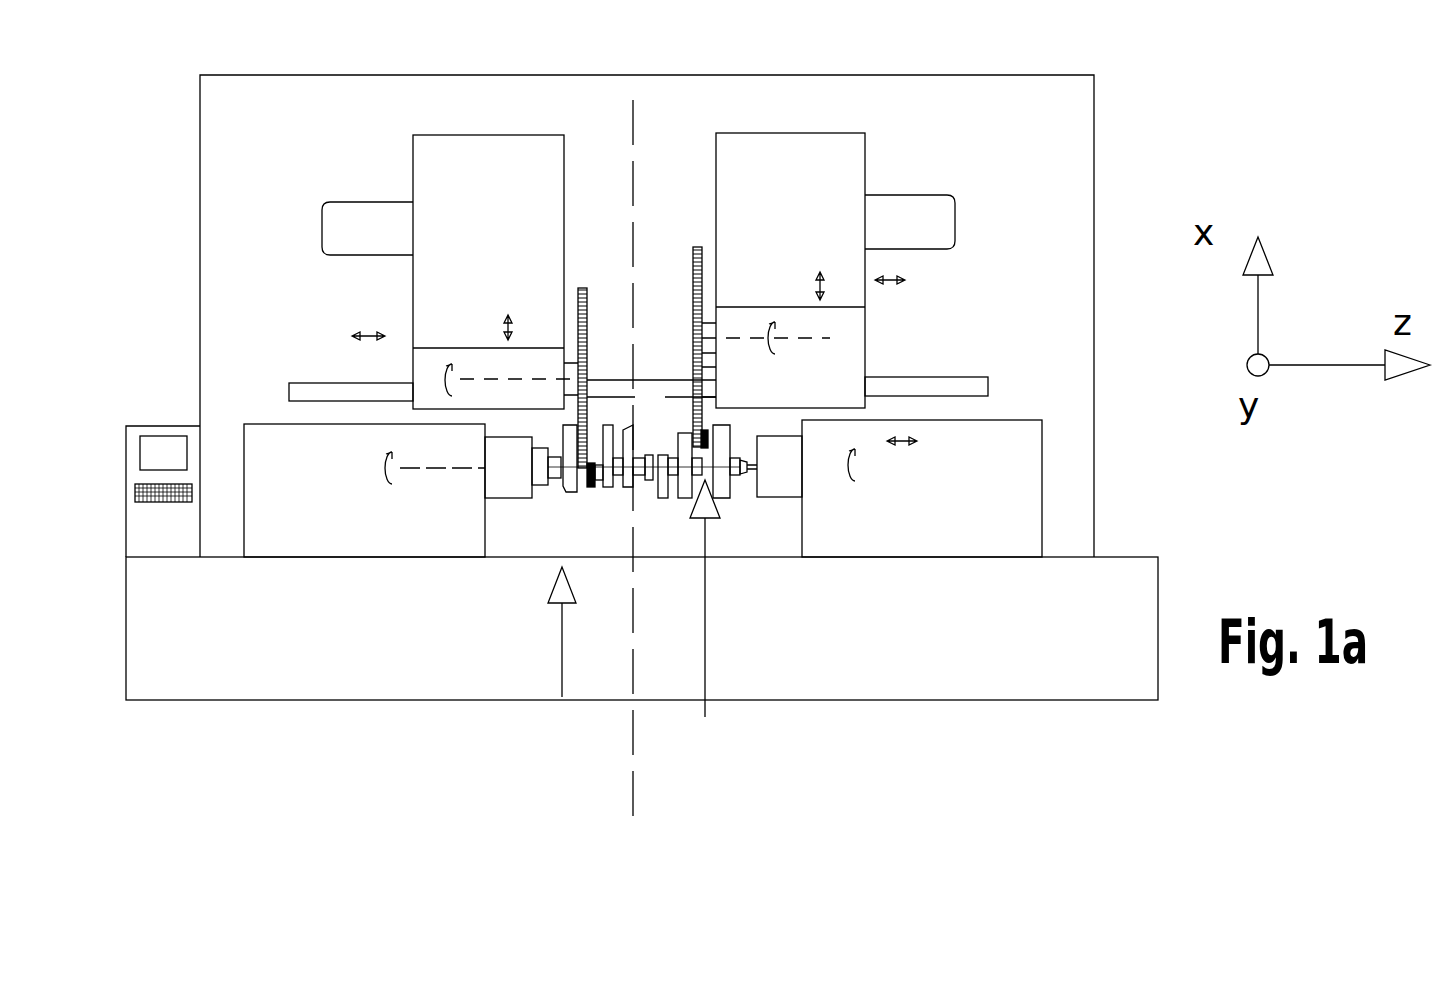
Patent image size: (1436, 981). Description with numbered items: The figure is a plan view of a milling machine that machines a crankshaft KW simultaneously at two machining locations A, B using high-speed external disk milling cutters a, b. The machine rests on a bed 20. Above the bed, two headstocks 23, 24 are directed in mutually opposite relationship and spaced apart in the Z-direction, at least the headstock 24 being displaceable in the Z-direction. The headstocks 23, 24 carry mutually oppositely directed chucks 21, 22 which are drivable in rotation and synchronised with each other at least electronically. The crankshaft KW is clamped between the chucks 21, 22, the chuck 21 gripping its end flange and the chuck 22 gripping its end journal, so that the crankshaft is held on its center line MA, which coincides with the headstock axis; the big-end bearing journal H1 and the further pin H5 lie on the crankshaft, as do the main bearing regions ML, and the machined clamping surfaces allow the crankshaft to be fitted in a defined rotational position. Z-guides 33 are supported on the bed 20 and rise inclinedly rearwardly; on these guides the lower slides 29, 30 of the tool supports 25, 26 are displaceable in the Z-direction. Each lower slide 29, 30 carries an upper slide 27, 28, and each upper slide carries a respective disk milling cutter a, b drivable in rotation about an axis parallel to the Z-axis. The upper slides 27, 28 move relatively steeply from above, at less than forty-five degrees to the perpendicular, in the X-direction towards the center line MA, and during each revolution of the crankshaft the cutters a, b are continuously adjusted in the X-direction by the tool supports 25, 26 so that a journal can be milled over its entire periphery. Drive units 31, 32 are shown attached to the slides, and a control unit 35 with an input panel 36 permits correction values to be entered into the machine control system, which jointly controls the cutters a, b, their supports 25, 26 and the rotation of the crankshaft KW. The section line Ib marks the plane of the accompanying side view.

The bed 20 is at (642, 628).
The chuck 21 is at (523, 466).
The chuck 22 is at (766, 467).
The headstock 23 is at (364, 490).
The headstock 24 is at (922, 488).
The tool support 25 is at (380, 148).
The tool support 26 is at (915, 155).
The upper slide 27 is at (422, 376).
The upper slide 28 is at (855, 348).
The lower slide 29 is at (488, 272).
The lower slide 30 is at (810, 270).
The first drive 31 is at (367, 228).
The second drive 32 is at (910, 222).
The Z-guides 33 is at (290, 385).
The control unit 35 is at (163, 492).
The input panel 36 is at (135, 484).
The crankshaft KW is at (568, 480).
The main bearing ML is at (670, 477).
The center line MA is at (817, 463).
The big-end bearing journal H1 is at (588, 485).
The fifth crank pin H5 is at (700, 438).
The disk milling cutter a is at (580, 284).
The disk milling cutter b is at (687, 297).
The machining location A is at (562, 660).
The machining location B is at (705, 619).
The section line Ib is at (633, 113).